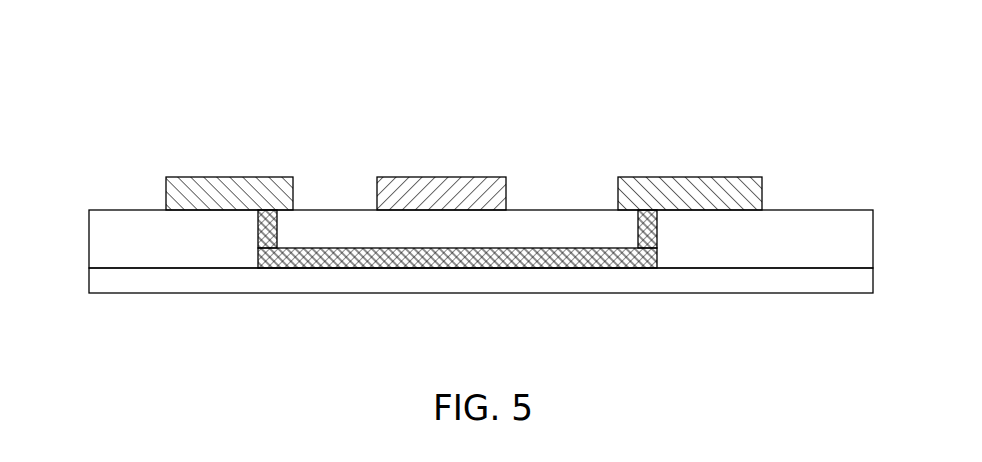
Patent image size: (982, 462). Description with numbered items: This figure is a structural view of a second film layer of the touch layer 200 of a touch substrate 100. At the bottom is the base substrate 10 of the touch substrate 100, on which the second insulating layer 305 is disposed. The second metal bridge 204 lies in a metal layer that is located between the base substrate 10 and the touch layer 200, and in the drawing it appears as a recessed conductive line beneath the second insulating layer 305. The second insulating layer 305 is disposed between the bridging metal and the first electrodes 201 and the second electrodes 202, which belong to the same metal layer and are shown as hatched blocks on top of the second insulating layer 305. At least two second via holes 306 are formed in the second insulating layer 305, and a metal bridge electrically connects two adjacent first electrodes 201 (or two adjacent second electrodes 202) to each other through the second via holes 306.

The touch substrate 100 is at (274, 108).
The touch layer 200 is at (83, 210).
The base substrate 10 is at (855, 291).
The second insulating layer 305 is at (858, 244).
The second via holes 306 is at (648, 232).
The second metal bridge 204 is at (355, 258).
The second electrodes 202 is at (440, 198).
The first electrodes 201 is at (693, 198).